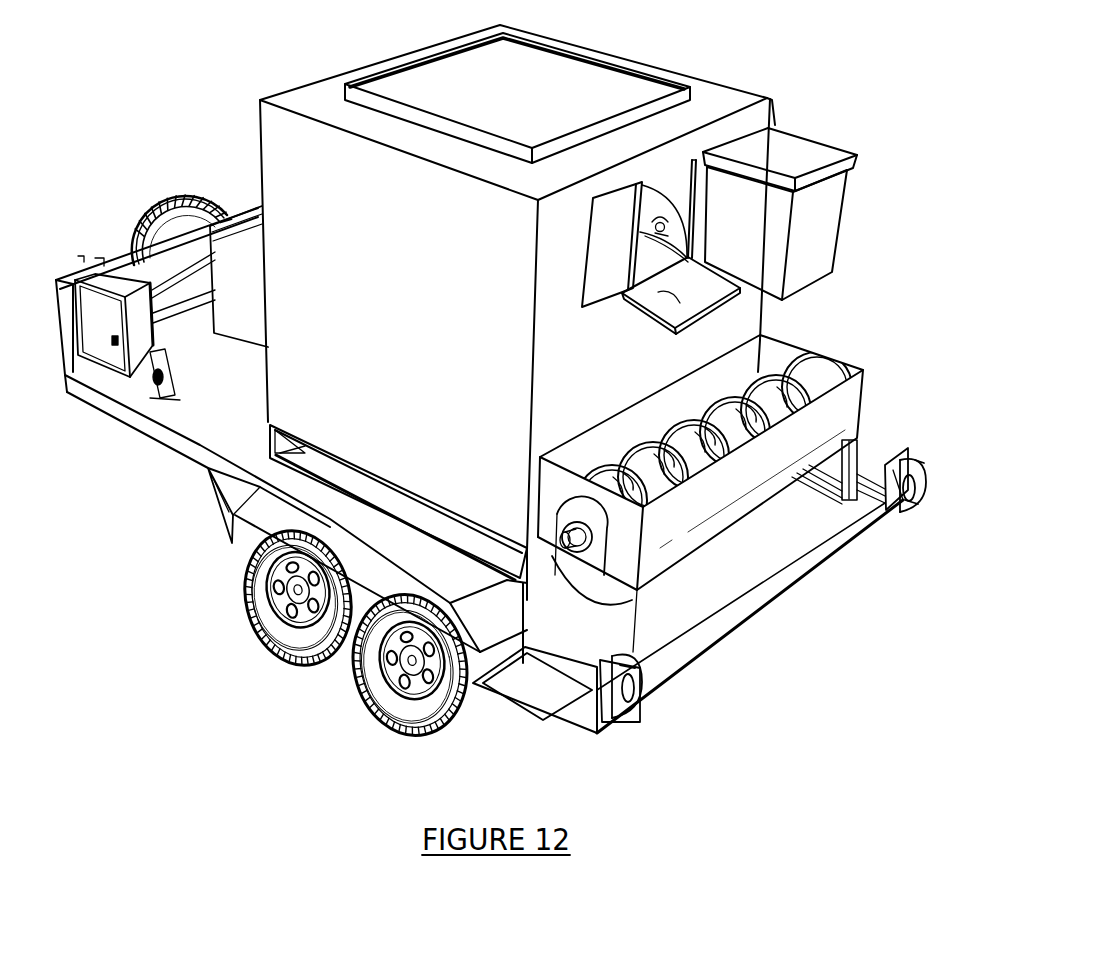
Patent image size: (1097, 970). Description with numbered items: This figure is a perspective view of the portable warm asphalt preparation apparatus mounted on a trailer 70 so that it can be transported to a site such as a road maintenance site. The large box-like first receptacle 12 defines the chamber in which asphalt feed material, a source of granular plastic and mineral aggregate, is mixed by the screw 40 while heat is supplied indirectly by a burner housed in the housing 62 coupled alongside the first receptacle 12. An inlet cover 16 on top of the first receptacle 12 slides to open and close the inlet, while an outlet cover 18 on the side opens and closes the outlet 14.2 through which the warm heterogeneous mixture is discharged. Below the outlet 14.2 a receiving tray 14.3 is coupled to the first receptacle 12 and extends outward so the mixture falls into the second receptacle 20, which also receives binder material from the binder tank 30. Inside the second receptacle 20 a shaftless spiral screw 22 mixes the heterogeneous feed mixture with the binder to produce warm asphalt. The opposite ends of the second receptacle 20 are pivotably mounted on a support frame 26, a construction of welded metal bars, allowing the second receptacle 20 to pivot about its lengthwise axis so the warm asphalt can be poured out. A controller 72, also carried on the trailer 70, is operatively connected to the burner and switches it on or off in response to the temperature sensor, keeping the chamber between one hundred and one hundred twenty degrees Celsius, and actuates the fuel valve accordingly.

The first receptacle 12 is at (272, 135).
The inlet cover 16 is at (615, 95).
The outlet cover 18 is at (600, 248).
The screw 40 is at (660, 228).
The outlet 14.2 is at (662, 235).
The receiving tray 14.3 is at (633, 292).
The binder tank 30 is at (820, 232).
The second receptacle 20 is at (850, 408).
The shaftless spiral screw 22 is at (800, 382).
The support frame 26 is at (857, 492).
The trailer 70 is at (182, 508).
The controller 72 is at (112, 355).
The housing 62 is at (245, 323).